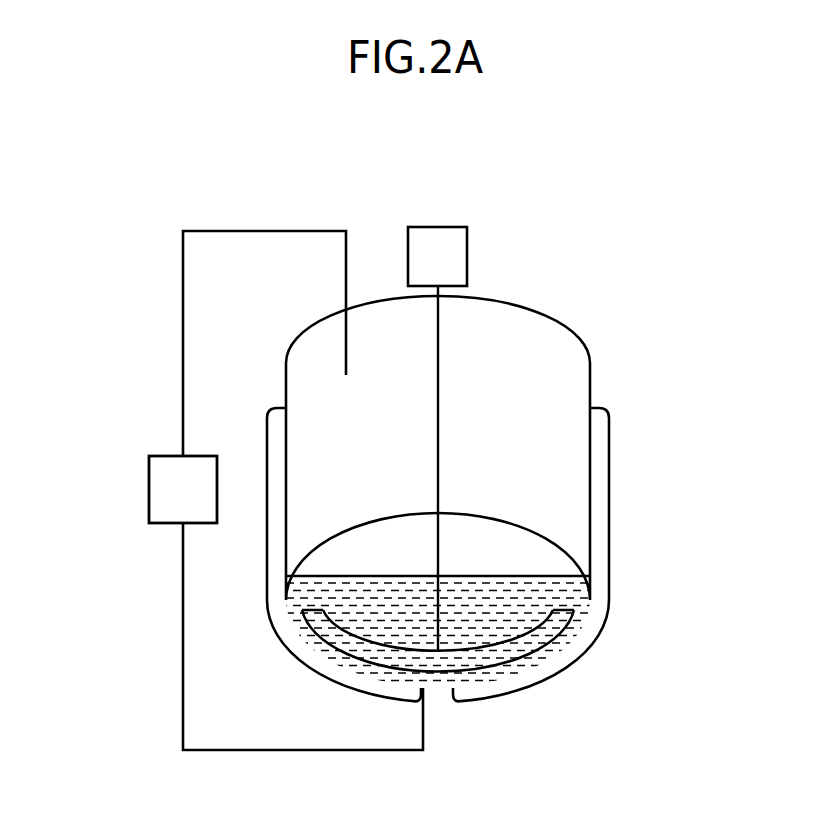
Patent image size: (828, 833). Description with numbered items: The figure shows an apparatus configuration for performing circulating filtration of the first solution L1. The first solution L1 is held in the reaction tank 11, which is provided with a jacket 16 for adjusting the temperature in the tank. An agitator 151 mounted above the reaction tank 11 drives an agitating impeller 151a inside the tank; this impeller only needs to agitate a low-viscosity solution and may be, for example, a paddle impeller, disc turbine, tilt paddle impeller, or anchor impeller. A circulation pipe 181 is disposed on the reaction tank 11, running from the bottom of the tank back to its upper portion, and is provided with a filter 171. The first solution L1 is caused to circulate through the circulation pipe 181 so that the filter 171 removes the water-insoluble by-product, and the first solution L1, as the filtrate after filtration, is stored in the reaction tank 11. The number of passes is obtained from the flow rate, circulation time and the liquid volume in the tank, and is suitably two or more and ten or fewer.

The reaction tank 11 is at (311, 329).
The jacket 16 is at (600, 502).
The agitator 151 is at (467, 254).
The agitating impeller 151a is at (510, 650).
The filter 171 is at (150, 487).
The circulation pipe 181 is at (183, 337).
The first solution L1 is at (573, 595).